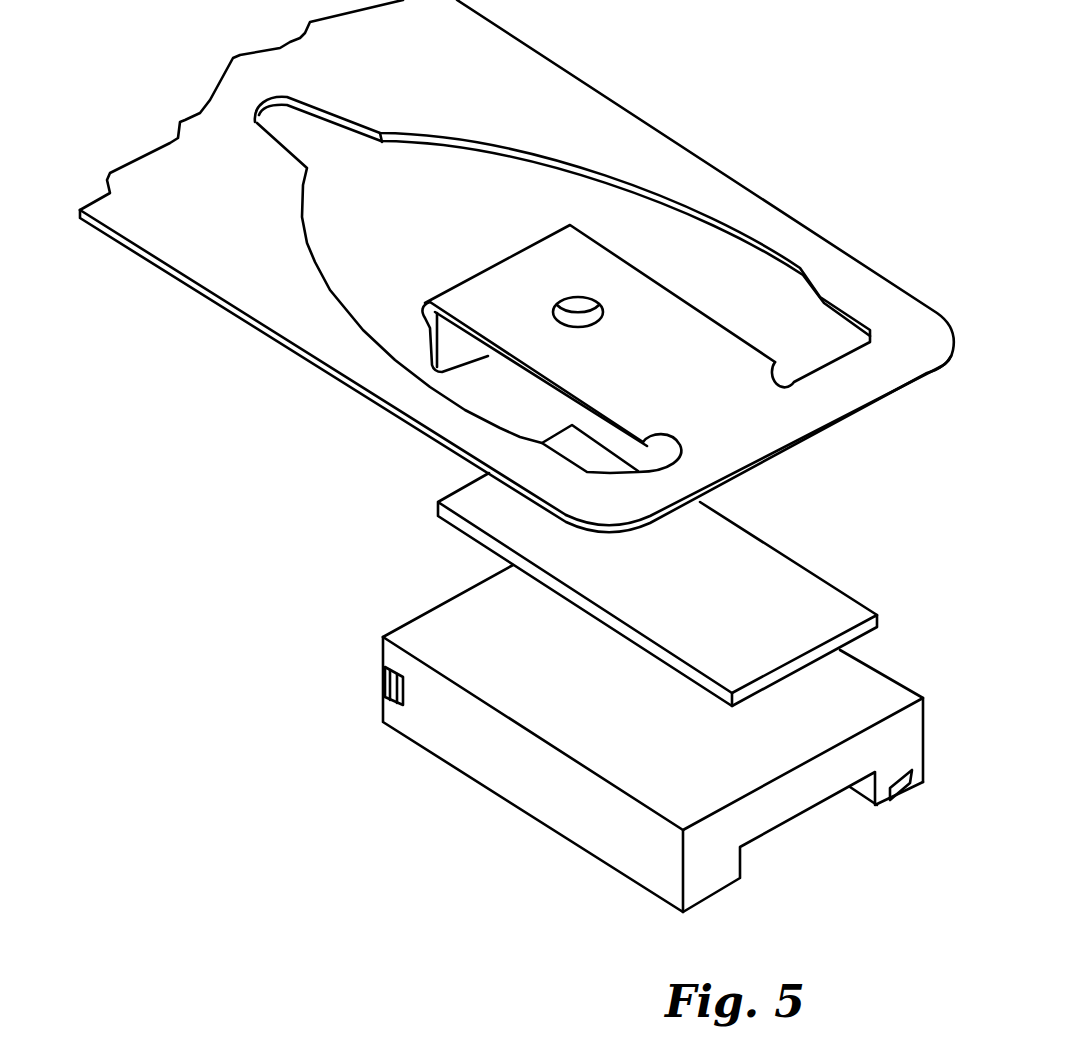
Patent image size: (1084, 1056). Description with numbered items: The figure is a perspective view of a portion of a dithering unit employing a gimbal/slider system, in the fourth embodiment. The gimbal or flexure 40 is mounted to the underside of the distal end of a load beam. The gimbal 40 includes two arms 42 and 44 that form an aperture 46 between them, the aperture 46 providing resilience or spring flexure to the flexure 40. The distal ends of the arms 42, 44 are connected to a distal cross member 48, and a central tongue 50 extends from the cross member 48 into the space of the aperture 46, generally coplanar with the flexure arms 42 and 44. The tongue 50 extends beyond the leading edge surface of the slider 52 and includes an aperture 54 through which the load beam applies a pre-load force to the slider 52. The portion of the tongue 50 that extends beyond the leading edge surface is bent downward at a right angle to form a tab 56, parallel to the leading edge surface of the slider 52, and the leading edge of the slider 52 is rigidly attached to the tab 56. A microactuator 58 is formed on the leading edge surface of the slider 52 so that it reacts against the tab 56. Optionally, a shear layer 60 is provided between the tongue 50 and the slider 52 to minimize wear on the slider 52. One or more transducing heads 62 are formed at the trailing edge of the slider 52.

The gimbal or flexure 40 is at (520, 65).
The arm 42 is at (780, 227).
The arm 44 is at (450, 422).
The aperture 46 is at (543, 177).
The distal cross member 48 is at (787, 430).
The central tongue 50 is at (698, 327).
The slider 52 is at (545, 795).
The aperture 54 is at (588, 298).
The tab 56 is at (455, 342).
The microactuator 58 is at (385, 683).
The shear layer 60 is at (473, 508).
The transducing head 62 is at (898, 788).